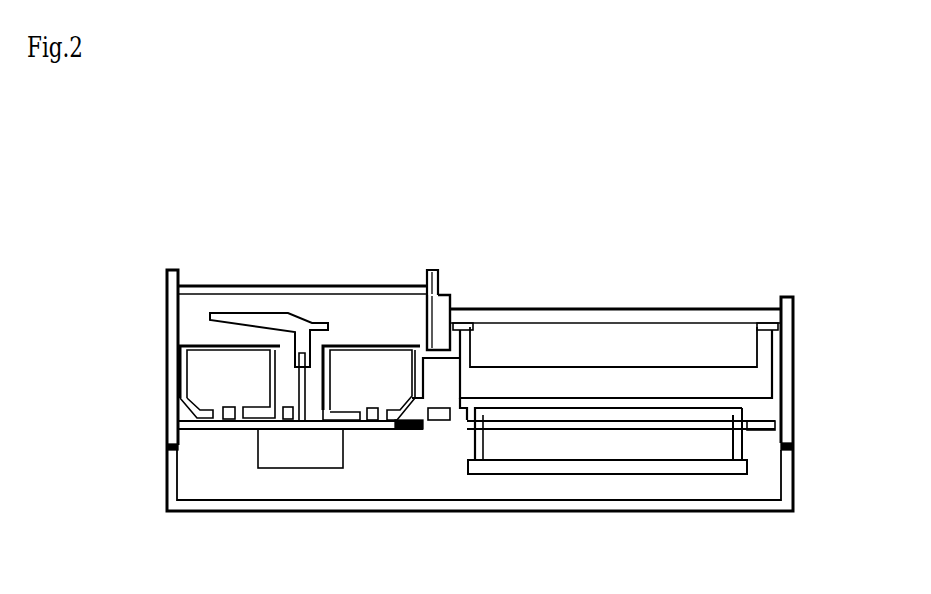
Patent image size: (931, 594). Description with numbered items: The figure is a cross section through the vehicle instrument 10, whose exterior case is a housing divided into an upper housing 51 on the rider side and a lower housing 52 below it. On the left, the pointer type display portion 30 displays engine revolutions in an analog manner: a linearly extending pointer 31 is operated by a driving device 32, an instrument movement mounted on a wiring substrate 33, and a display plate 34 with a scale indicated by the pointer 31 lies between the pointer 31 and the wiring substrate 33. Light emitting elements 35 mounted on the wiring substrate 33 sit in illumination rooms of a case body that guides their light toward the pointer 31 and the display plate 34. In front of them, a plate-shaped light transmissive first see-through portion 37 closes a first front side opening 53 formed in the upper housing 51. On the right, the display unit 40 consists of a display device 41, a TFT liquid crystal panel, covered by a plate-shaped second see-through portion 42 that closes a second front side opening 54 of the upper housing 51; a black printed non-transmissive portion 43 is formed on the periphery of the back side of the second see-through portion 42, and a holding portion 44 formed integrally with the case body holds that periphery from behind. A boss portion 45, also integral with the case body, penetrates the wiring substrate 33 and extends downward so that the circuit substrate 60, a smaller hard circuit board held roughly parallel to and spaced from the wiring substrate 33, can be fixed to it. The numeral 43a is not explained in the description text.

The vehicle instrument 10 is at (546, 185).
The pointer type display portion 30 is at (312, 240).
The pointer 31 is at (262, 316).
The driving device 32 is at (279, 462).
The wiring substrate 33 is at (211, 430).
The display plate 34 is at (367, 348).
The light emitting elements 35 is at (372, 428).
The first see-through portion 37 is at (212, 285).
The display unit 40 is at (692, 265).
The display device 41 is at (613, 333).
The second see-through portion 42 is at (650, 318).
The non-transmissive portion 43 is at (466, 326).
The holding piece foot 43a is at (435, 418).
The holding portion 44 is at (772, 370).
The boss portion 45 is at (738, 450).
The upper housing 51 is at (173, 332).
The lower housing 52 is at (487, 503).
The first front side opening 53 is at (425, 280).
The second front side opening 54 is at (780, 305).
The circuit substrate 60 is at (667, 467).